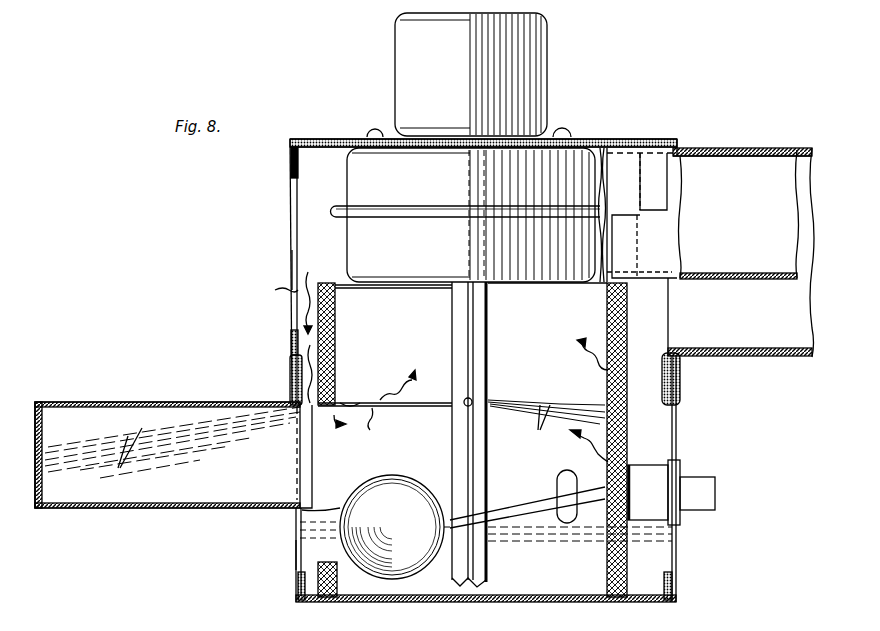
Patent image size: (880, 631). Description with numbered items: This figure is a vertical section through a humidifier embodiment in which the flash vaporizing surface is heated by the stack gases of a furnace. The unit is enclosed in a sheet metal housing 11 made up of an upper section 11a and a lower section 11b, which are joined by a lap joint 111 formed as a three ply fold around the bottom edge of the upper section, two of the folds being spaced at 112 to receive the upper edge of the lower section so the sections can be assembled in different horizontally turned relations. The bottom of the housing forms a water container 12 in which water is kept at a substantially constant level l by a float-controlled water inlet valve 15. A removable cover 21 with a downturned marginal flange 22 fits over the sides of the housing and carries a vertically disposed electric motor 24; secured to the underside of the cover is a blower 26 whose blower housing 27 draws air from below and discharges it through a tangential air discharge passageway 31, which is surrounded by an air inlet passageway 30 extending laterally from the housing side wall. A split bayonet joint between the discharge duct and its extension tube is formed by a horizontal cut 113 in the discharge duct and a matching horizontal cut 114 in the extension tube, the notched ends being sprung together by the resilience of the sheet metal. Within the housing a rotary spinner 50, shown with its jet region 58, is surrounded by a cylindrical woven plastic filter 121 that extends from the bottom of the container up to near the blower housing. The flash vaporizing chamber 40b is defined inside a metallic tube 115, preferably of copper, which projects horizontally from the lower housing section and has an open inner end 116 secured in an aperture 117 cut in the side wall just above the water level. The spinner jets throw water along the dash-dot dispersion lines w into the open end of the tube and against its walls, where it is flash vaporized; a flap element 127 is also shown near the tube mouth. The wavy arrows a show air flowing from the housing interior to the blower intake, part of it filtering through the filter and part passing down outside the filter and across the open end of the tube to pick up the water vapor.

The housing 11 is at (274, 318).
The upper section 11a is at (292, 265).
The lower section 11b is at (296, 555).
The water container 12 is at (656, 556).
The water inlet valve 15 is at (643, 476).
The cover 21 is at (338, 139).
The marginal flange 22 is at (291, 168).
The electric motor 24 is at (410, 66).
The blower 26 is at (347, 196).
The blower housing 27 is at (356, 244).
The air inlet passageway 30 is at (796, 148).
The air discharge passageway 31 is at (612, 160).
The flash vaporizing chamber 40b is at (208, 479).
The rotary spinner 50 is at (452, 320).
The pivot 58 is at (467, 397).
The lap joint 111 is at (290, 366).
The fold spacing 112 is at (289, 393).
The horizontal cut 113 is at (656, 215).
The horizontal cut 114 is at (625, 208).
The metallic tube 115 is at (172, 402).
The open inner end 116 is at (313, 462).
The aperture 117 is at (343, 512).
The woven plastic filter 121 is at (336, 327).
The flap 127 is at (356, 403).
The air flow arrows a is at (270, 299).
The water dispersion lines w is at (325, 443).
The water level l is at (296, 523).